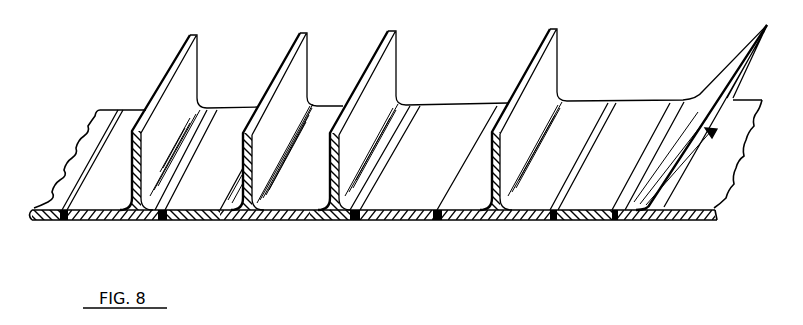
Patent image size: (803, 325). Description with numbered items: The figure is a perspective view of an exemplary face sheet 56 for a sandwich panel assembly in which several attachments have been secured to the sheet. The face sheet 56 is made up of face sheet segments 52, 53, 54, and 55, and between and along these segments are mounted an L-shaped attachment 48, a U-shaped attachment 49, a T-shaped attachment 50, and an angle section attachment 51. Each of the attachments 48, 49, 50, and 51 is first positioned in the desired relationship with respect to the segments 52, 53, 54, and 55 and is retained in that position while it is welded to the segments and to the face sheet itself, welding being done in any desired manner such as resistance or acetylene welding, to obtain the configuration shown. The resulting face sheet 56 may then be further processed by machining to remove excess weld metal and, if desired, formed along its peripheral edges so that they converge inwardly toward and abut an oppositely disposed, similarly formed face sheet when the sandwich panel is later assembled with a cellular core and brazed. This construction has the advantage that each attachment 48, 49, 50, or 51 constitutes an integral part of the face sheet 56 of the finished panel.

The L-shaped attachment 48 is at (183, 80).
The U-shaped attachment 49 is at (322, 120).
The T-shaped attachment 50 is at (543, 87).
The angle section attachment 51 is at (722, 83).
The face sheet segment 52 is at (60, 192).
The face sheet segment 53 is at (220, 183).
The face sheet segment 54 is at (449, 157).
The face sheet segment 55 is at (629, 157).
The face sheet 56 is at (399, 226).